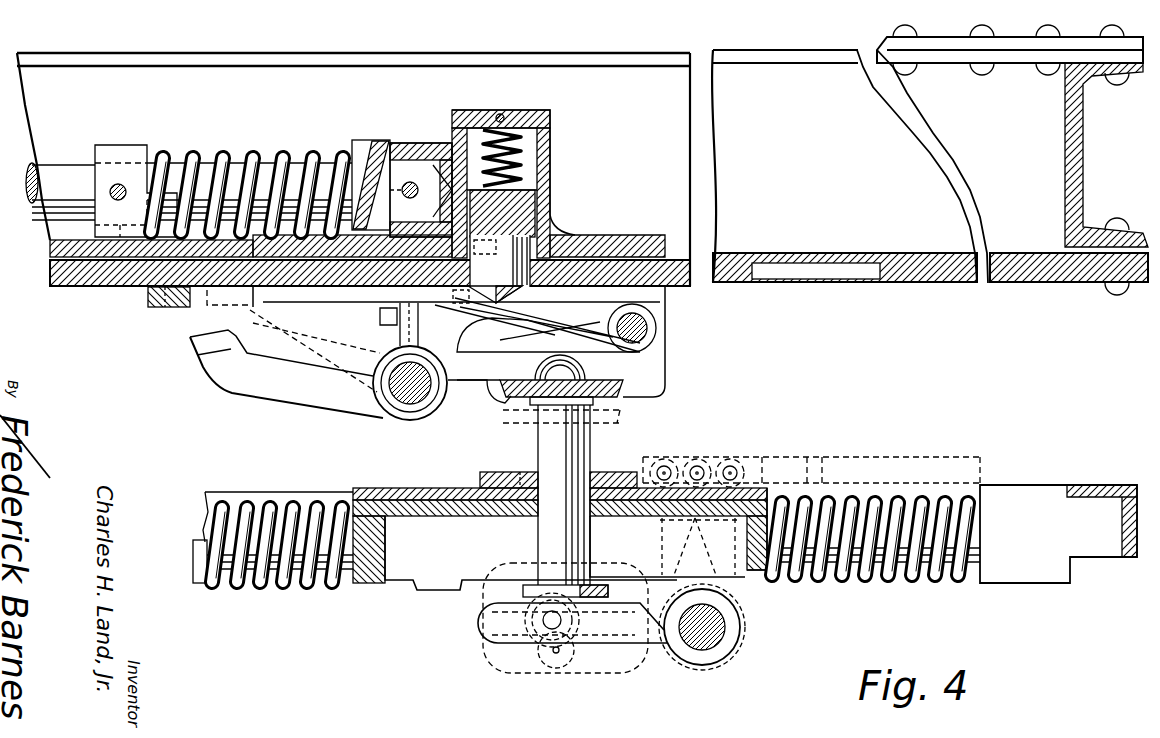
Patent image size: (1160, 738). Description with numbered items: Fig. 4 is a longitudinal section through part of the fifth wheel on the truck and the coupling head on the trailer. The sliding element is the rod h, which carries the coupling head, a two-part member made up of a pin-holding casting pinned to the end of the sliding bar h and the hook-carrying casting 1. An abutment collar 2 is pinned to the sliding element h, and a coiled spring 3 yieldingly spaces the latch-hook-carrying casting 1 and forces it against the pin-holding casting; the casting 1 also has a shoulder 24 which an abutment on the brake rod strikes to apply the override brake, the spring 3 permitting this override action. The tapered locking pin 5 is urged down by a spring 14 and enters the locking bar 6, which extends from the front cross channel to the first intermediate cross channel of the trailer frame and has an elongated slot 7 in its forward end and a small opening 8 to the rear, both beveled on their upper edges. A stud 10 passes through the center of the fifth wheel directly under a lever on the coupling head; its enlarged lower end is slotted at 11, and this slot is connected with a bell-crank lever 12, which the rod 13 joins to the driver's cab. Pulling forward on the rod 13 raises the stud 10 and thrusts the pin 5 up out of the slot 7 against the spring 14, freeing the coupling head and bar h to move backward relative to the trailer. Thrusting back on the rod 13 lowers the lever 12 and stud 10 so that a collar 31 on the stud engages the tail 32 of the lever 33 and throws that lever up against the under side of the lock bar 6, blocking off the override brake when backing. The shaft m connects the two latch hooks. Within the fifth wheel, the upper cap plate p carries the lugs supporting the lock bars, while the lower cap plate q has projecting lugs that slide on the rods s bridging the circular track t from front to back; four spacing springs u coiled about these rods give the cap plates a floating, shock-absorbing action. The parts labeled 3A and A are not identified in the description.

The sliding bar h is at (63, 177).
The abutment collar 2 is at (130, 143).
The coiled spring 3 is at (187, 147).
The shoulder 24 is at (293, 187).
The hook-carrying casting 1 is at (373, 140).
The spring 14 is at (522, 158).
The tapered locking pin 5 is at (553, 206).
The small opening 8 is at (592, 236).
The elongated slot 7 is at (818, 253).
The locking bar 6 is at (107, 289).
The block 3A is at (150, 310).
The lever 33 is at (260, 388).
The shaft m is at (403, 393).
The upper cap plate p is at (414, 487).
The tail 32 is at (487, 413).
The frame A is at (662, 356).
The collar 31 is at (647, 388).
The stud 10 is at (570, 454).
The lower cap plate q is at (393, 582).
The rods s is at (224, 588).
The spacing springs u is at (278, 588).
The slot 11 is at (497, 624).
The lever 12 is at (664, 652).
The rod 13 is at (898, 461).
The circular track t is at (1082, 485).